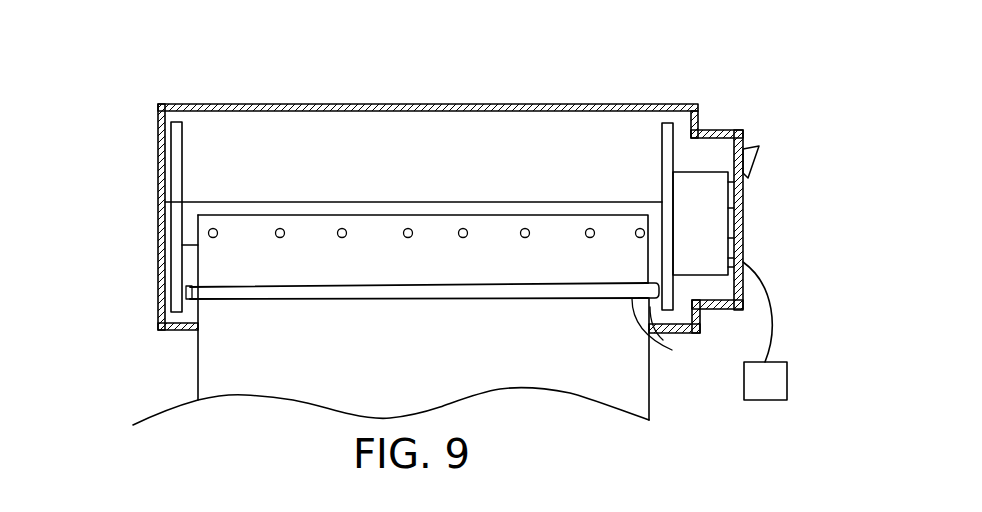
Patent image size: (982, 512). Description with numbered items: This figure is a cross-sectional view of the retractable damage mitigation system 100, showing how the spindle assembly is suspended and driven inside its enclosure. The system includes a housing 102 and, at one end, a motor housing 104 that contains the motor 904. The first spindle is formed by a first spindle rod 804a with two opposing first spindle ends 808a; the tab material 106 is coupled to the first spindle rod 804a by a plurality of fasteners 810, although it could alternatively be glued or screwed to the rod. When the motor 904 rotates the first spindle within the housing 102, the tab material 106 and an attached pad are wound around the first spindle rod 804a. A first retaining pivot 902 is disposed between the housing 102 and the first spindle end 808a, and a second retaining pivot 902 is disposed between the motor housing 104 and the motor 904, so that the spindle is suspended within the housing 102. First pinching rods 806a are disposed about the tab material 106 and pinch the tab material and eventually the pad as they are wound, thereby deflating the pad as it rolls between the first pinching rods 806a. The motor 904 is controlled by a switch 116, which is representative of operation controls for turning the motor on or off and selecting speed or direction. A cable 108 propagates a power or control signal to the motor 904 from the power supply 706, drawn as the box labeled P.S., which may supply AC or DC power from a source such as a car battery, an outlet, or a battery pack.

The retractable damage mitigation system 100 is at (245, 95).
The housing 102 is at (438, 102).
The motor housing 104 is at (746, 126).
The tab material 106 is at (198, 362).
The cable 108 is at (774, 314).
The switch 116 is at (758, 156).
The power supply 706 is at (772, 400).
The first spindle rod 804a is at (192, 212).
The first pinching rods 806a is at (455, 331).
The first spindle end 808a is at (177, 272).
The fasteners 810 is at (408, 228).
The retaining pivot 902 is at (162, 218).
The motor 904 is at (700, 257).